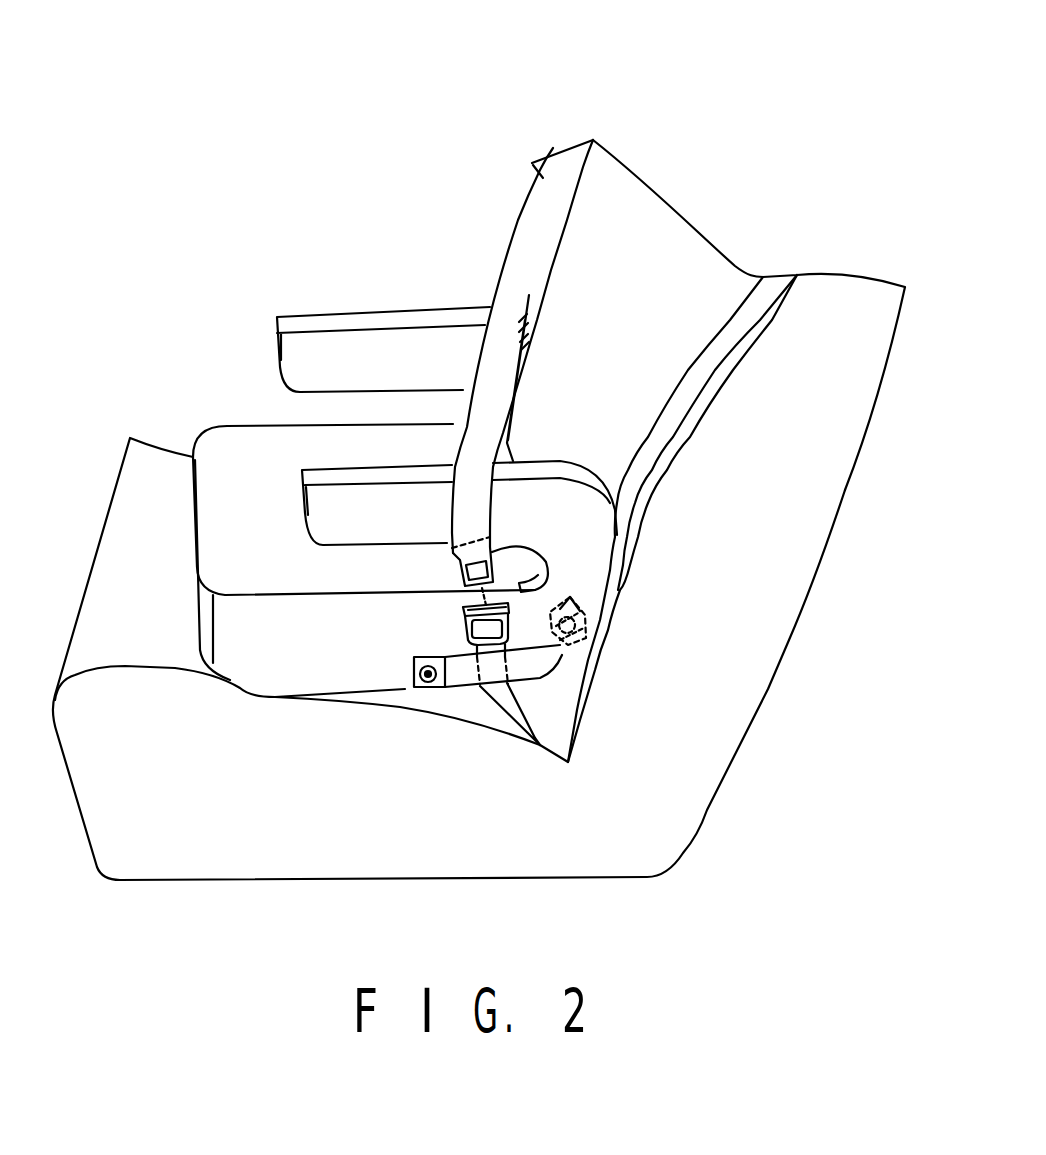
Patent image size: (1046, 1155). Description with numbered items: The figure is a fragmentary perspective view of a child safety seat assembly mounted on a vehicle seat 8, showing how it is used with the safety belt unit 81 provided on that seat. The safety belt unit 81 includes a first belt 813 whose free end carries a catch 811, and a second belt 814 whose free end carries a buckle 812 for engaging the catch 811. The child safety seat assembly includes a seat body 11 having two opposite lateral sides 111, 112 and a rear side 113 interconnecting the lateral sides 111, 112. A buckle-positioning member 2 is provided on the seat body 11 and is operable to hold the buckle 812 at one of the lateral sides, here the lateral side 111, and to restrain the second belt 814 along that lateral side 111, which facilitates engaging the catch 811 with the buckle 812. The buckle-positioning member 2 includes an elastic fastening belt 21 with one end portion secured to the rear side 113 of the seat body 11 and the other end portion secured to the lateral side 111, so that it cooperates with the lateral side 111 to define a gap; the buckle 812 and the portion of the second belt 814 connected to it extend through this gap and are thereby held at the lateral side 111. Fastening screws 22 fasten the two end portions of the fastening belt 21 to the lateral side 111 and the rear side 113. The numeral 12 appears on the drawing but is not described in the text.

The buckle-positioning member 2 is at (526, 641).
The vehicle seat 8 is at (838, 288).
The seat body 11 is at (232, 655).
The backrest front edge 12 is at (728, 362).
The fastening belt 21 is at (518, 735).
The fastening screws 22 is at (423, 673).
The safety belt unit 81 is at (553, 126).
The lateral side 111 is at (330, 663).
The lateral side 112 is at (213, 427).
The rear side 113 is at (563, 602).
The catch 811 is at (490, 555).
The buckle 812 is at (465, 609).
The first belt 813 is at (523, 265).
The second belt 814 is at (503, 707).